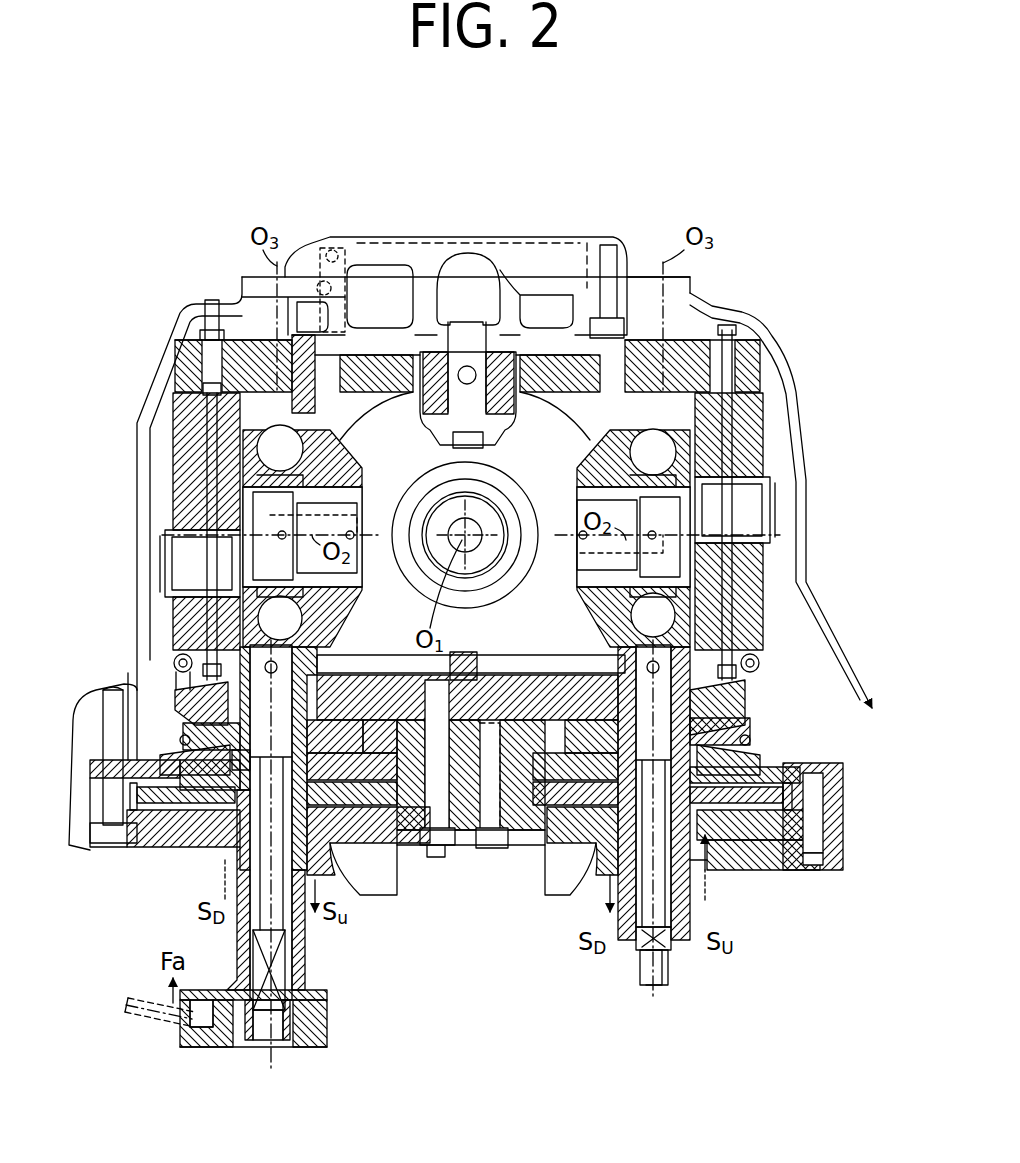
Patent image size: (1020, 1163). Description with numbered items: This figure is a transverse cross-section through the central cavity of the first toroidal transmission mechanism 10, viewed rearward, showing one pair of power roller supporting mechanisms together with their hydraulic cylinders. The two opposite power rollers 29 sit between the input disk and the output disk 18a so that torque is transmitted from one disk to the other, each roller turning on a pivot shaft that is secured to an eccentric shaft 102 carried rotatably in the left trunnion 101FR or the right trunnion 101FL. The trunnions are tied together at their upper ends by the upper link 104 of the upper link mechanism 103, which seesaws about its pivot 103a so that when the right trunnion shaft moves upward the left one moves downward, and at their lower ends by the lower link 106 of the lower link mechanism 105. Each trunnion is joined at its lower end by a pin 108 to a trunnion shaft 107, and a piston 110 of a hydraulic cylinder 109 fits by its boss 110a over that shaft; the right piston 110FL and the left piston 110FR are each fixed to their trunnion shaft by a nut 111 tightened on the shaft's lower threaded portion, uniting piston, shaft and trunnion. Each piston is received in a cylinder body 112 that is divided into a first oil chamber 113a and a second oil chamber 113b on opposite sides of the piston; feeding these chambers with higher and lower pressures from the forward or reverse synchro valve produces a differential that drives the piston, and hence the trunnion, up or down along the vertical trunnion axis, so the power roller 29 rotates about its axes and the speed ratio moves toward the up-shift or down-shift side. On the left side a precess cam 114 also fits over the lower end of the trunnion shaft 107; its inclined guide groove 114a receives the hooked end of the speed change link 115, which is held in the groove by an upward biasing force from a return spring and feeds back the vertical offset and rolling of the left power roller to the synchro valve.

The first toroidal transmission mechanism 10 is at (642, 240).
The case section 18a is at (630, 395).
The power roller 29 is at (348, 443).
The left trunnion 101FR is at (182, 420).
The right trunnion 101FL is at (740, 430).
The eccentric shaft 102 is at (175, 560).
The upper link mechanism 103 is at (545, 350).
The pivot 103a is at (470, 372).
The upper link 104 is at (190, 372).
The lower link mechanism 105 is at (538, 660).
The lower link 106 is at (748, 690).
The trunnion shaft 107 is at (225, 703).
The pin 108 is at (278, 667).
The hydraulic cylinder 109 is at (180, 735).
The lower case 110 is at (400, 860).
The boss 110a is at (397, 840).
The left piston 110FR is at (170, 845).
The right piston 110FL is at (760, 840).
The nut 111 is at (290, 1050).
The cylinder body 112 is at (855, 790).
The first oil chamber 113a is at (178, 766).
The second oil chamber 113b is at (188, 805).
The precess cam 114 is at (327, 1030).
The guide groove 114a is at (215, 1050).
The speed change link 115 is at (135, 1028).